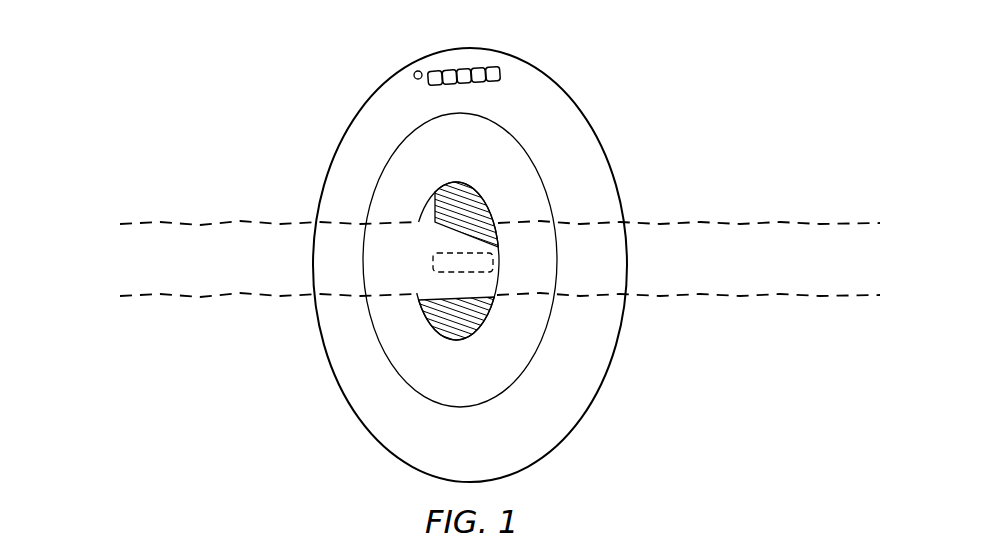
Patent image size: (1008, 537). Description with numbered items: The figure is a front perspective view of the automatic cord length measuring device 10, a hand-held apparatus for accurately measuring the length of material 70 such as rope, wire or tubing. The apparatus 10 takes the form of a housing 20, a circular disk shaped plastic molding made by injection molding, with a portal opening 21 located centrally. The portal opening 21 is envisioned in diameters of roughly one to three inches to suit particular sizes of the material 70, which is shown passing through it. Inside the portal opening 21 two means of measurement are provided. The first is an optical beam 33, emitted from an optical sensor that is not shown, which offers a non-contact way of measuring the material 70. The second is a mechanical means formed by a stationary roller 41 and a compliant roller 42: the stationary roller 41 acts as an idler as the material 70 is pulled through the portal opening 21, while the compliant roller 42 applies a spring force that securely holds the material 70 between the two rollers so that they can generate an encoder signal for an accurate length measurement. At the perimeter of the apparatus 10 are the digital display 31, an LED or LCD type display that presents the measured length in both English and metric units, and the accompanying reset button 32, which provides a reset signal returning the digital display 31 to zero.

The automatic cord length measuring device 10 is at (186, 141).
The housing 20 is at (602, 143).
The portal opening 21 is at (493, 222).
The digital display 31 is at (505, 70).
The reset button 32 is at (412, 68).
The optical beam 33 is at (468, 265).
The stationary roller 41 is at (443, 198).
The compliant roller 42 is at (447, 315).
The material 70 is at (178, 243).